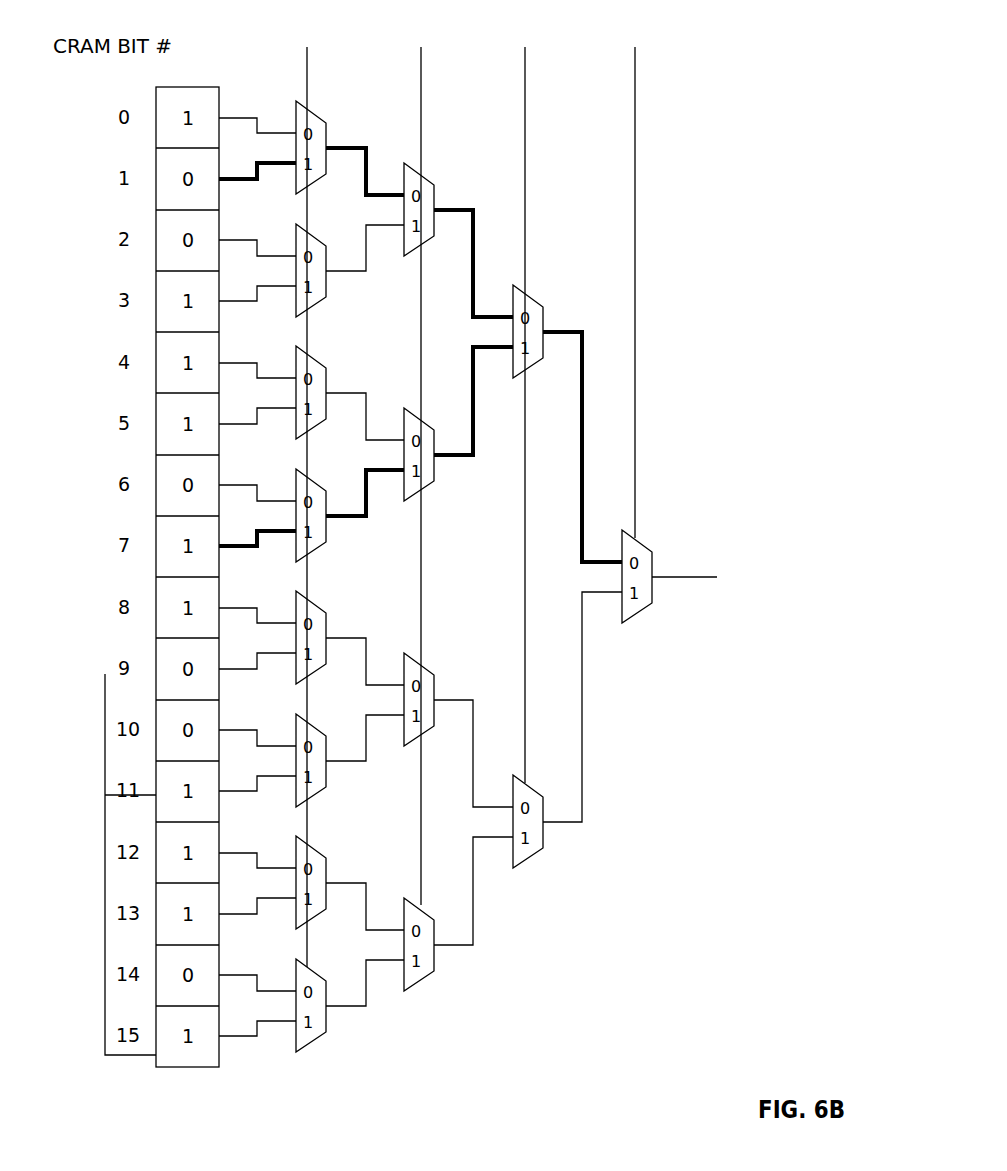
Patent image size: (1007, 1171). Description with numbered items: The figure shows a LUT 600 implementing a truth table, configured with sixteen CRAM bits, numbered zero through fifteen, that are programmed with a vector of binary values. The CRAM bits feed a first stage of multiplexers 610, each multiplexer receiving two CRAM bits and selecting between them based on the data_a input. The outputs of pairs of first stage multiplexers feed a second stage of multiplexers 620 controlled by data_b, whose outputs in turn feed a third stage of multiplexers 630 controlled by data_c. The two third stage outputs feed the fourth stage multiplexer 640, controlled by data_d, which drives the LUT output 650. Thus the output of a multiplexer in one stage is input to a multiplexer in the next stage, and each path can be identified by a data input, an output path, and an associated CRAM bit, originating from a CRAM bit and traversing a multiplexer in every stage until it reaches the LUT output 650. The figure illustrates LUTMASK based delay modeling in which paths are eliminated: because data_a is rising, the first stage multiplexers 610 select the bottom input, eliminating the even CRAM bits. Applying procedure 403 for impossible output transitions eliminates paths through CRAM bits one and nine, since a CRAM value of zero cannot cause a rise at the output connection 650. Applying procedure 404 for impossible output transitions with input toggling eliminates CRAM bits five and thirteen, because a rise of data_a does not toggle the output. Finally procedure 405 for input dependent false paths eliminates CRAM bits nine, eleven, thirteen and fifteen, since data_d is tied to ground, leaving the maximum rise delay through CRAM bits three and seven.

The path elimination procedure for impossible output transitions 403 is at (156, 188).
The path elimination procedure for impossible output transitions with input toggling 404 is at (156, 432).
The path elimination procedure for input dependent false paths 405 is at (102, 866).
The LUT 600 is at (565, 565).
The first stage of multiplexers 610 is at (320, 1062).
The second stage of multiplexers 620 is at (428, 1010).
The third stage of multiplexers 630 is at (534, 882).
The fourth stage multiplexer 640 is at (645, 620).
The LUT output 650 is at (755, 594).